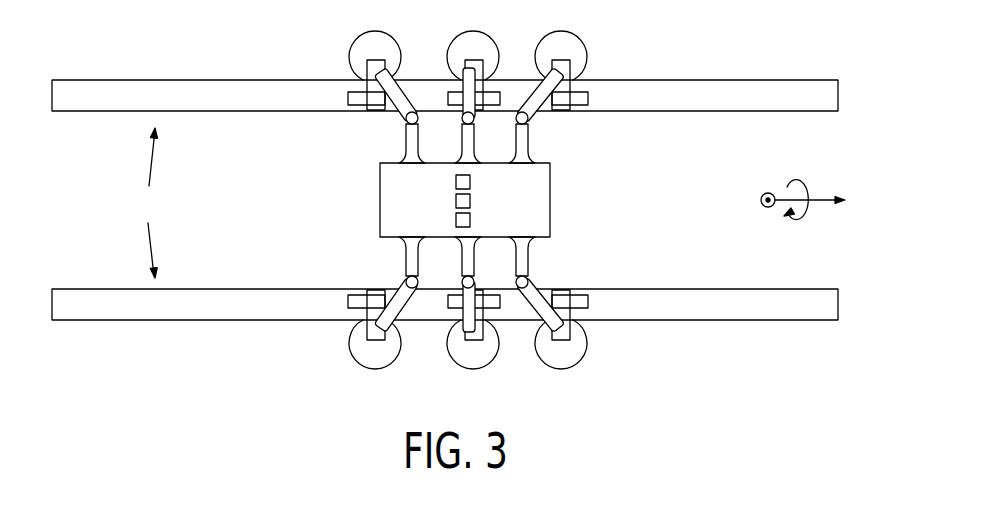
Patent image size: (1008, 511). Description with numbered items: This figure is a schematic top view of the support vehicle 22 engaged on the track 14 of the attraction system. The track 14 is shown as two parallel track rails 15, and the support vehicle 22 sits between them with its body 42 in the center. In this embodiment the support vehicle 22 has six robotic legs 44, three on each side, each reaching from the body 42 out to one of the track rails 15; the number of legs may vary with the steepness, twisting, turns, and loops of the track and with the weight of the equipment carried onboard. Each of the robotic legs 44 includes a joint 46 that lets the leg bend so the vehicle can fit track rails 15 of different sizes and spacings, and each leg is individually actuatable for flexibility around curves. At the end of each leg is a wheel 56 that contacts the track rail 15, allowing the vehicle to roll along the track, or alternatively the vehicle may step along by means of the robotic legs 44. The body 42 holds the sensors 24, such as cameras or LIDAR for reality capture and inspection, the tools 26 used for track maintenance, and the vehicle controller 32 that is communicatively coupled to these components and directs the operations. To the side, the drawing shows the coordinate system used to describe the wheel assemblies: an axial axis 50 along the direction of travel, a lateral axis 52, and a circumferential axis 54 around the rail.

The track 14 is at (149, 203).
The track rail 15 is at (705, 80).
The support vehicle 22 is at (506, 202).
The sensors 24 is at (471, 181).
The tools 26 is at (455, 201).
The vehicle controller 32 is at (471, 218).
The body 42 is at (551, 223).
The robotic legs 44 is at (555, 244).
The joints 46 is at (406, 119).
The axial axis 50 is at (818, 198).
The lateral axis 52 is at (760, 201).
The circumferential axis 54 is at (804, 181).
The wheels 56 is at (379, 31).